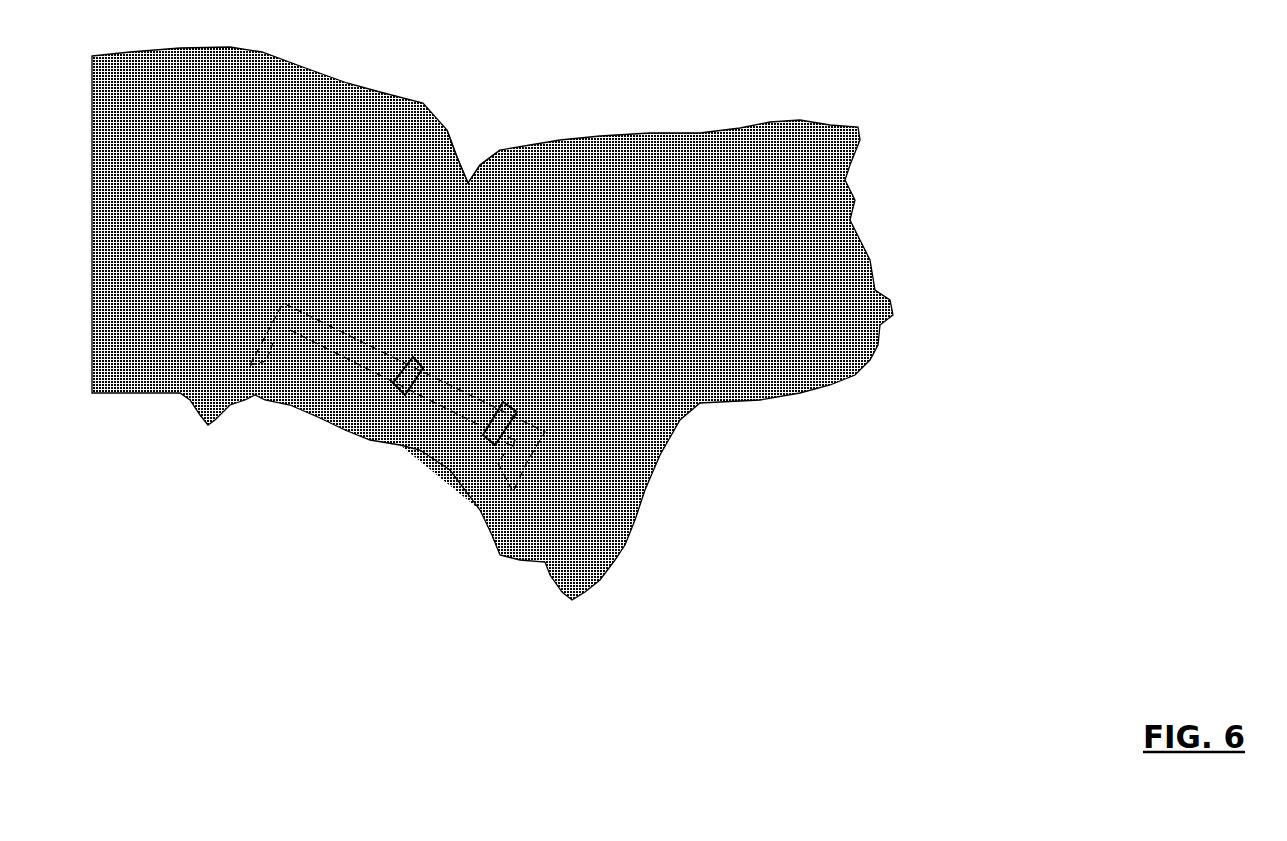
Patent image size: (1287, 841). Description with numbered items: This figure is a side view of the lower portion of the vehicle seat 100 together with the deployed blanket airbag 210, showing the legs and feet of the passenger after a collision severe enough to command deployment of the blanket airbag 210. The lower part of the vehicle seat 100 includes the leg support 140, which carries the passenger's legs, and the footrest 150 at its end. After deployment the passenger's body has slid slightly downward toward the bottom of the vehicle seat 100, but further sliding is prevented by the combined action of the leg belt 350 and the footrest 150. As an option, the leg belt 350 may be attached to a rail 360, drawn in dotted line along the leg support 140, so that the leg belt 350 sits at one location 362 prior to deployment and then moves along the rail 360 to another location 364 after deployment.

The vehicle seat 100 is at (1067, 128).
The leg support 140 is at (408, 433).
The footrest 150 is at (690, 412).
The blanket airbag 210 is at (297, 72).
The leg belt 350 is at (467, 203).
The rail 360 is at (270, 355).
The location prior to deployment 362 is at (490, 440).
The location after deployment 364 is at (393, 390).